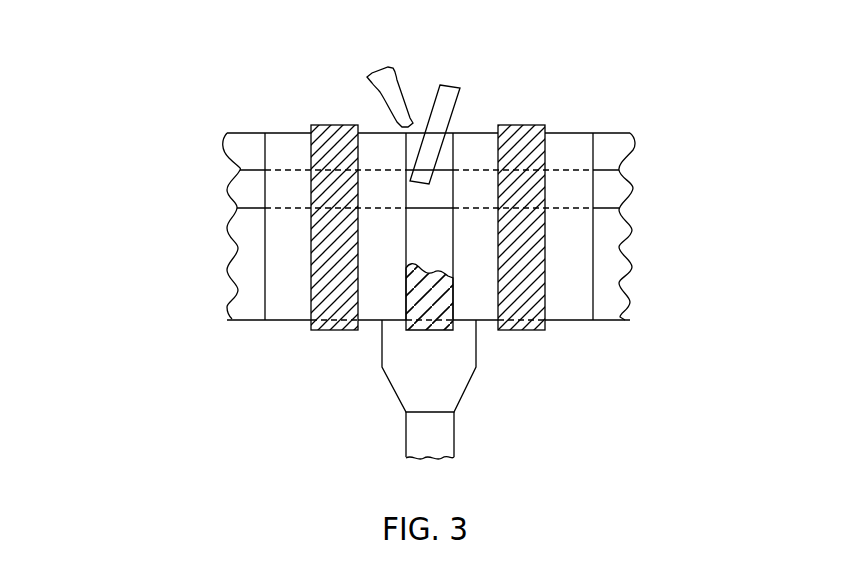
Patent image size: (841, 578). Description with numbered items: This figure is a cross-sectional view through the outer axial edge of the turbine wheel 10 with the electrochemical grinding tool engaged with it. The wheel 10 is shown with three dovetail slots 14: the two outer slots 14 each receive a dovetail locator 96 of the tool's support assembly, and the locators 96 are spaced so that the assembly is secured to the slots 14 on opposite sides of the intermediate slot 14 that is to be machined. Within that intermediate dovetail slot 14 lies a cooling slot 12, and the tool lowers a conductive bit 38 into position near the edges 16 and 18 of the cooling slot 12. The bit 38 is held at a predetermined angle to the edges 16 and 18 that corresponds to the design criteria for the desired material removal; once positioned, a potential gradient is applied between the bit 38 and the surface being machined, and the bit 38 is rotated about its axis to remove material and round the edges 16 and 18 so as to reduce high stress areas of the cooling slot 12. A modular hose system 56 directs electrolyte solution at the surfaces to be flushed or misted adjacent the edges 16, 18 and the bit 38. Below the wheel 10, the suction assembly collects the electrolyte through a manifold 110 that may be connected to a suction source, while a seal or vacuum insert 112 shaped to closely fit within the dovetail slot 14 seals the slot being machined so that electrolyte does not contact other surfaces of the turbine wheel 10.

The turbine wheel 10 is at (179, 169).
The cooling slot 12 is at (442, 170).
The dovetail slot 14 is at (608, 147).
The edge of cooling slot 16 is at (433, 192).
The edge of cooling slot 18 is at (405, 187).
The conductive bit 38 is at (445, 105).
The modular hose system 56 is at (387, 83).
The dovetail locator 96 is at (332, 310).
The manifold 110 is at (412, 371).
The seal insert and/or vacuum insert 112 is at (435, 307).